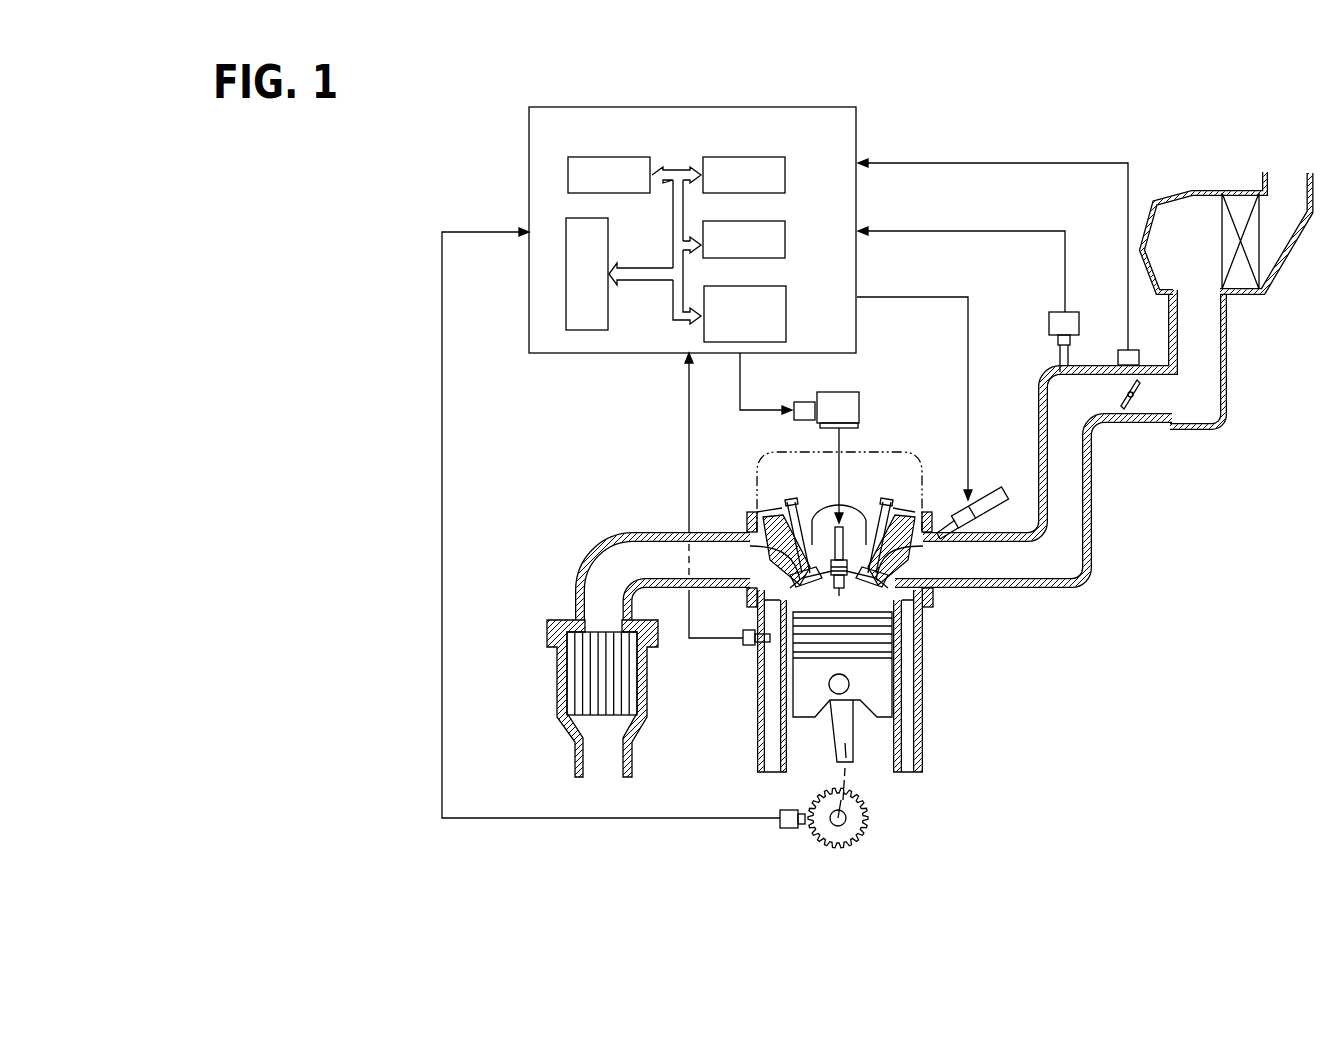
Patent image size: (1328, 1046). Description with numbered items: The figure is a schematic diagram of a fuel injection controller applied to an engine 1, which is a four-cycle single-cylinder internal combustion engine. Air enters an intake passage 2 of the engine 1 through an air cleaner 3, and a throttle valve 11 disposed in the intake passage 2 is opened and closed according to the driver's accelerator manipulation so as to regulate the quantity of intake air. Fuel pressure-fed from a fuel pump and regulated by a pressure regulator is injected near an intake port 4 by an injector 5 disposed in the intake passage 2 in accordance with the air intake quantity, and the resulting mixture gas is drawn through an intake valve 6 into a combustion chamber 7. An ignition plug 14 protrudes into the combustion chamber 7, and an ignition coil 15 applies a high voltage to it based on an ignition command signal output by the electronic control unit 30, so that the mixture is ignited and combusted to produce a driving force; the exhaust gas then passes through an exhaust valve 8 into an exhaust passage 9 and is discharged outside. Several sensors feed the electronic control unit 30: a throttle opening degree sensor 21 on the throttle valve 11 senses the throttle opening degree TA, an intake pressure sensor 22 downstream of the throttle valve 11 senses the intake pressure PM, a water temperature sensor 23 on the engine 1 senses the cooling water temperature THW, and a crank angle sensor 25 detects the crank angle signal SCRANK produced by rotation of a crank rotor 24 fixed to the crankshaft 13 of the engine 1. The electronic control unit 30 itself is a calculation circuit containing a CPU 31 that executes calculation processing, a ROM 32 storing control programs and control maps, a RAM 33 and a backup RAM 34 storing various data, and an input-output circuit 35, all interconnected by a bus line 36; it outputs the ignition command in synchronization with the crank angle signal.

The engine 1 is at (816, 687).
The intake passage 2 is at (1073, 482).
The air cleaner 3 is at (1262, 225).
The intake port 4 is at (958, 585).
The injector 5 is at (958, 503).
The intake valve 6 is at (903, 558).
The combustion chamber 7 is at (818, 605).
The exhaust valve 8 is at (765, 560).
The exhaust passage 9 is at (655, 532).
The throttle valve 11 is at (1140, 383).
The crankshaft 13 is at (847, 818).
The ignition plug 14 is at (857, 580).
The ignition coil 15 is at (857, 405).
The throttle opening degree sensor 21 is at (1125, 350).
The intake pressure sensor 22 is at (1055, 312).
The water temperature sensor 23 is at (747, 643).
The crank rotor 24 is at (820, 837).
The crank angle sensor 25 is at (780, 812).
The electronic control unit 30 is at (857, 141).
The CPU 31 is at (637, 157).
The ROM 32 is at (787, 172).
The RAM 33 is at (787, 240).
The backup RAM 34 is at (788, 310).
The input-output circuit 35 is at (610, 242).
The bus line 36 is at (648, 283).